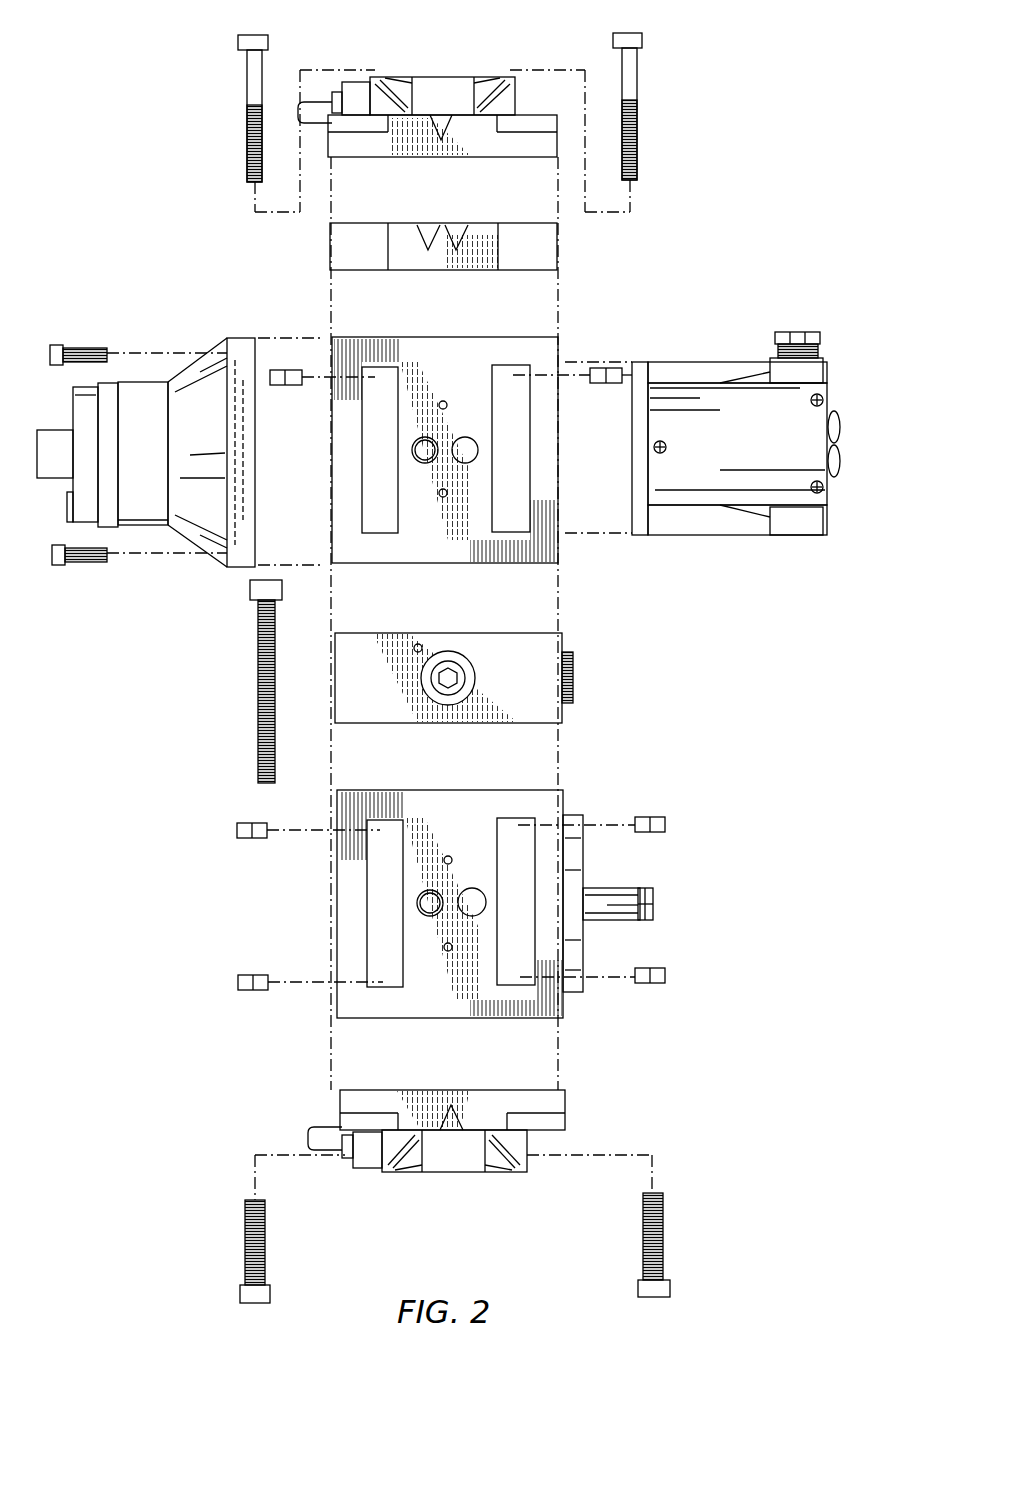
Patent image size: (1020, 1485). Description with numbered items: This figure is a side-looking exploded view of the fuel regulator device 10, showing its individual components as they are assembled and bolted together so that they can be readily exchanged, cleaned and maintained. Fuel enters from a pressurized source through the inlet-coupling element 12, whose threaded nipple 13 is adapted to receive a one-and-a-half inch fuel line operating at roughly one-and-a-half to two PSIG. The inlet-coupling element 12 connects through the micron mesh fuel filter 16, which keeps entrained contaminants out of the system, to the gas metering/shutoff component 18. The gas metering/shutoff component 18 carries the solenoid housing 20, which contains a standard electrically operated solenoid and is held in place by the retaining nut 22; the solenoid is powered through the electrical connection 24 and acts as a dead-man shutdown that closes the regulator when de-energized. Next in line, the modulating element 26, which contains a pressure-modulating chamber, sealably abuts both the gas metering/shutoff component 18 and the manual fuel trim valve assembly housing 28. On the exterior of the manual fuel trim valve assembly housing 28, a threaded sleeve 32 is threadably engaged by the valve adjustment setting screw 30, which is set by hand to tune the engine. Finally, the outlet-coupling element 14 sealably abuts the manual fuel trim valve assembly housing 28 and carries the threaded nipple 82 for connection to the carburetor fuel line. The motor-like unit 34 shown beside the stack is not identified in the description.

The fuel regulator device 10 is at (453, 651).
The inlet-coupling element 12 is at (329, 158).
The threaded nipple 13 is at (447, 76).
The outlet-coupling element 14 is at (565, 1097).
The micron mesh fuel filter 16 is at (558, 250).
The gas metering/shutoff component 18 is at (556, 340).
The solenoid housing 20 is at (672, 367).
The retaining nut 22 is at (836, 478).
The electrical connection 24 is at (826, 365).
The modulating element 26 is at (558, 712).
The manual fuel trim valve assembly housing 28 is at (558, 803).
The valve adjustment setting screw 30 is at (650, 918).
The threaded sleeve 32 is at (625, 890).
The motor 34 is at (240, 338).
The threaded nipple 82 is at (522, 1172).